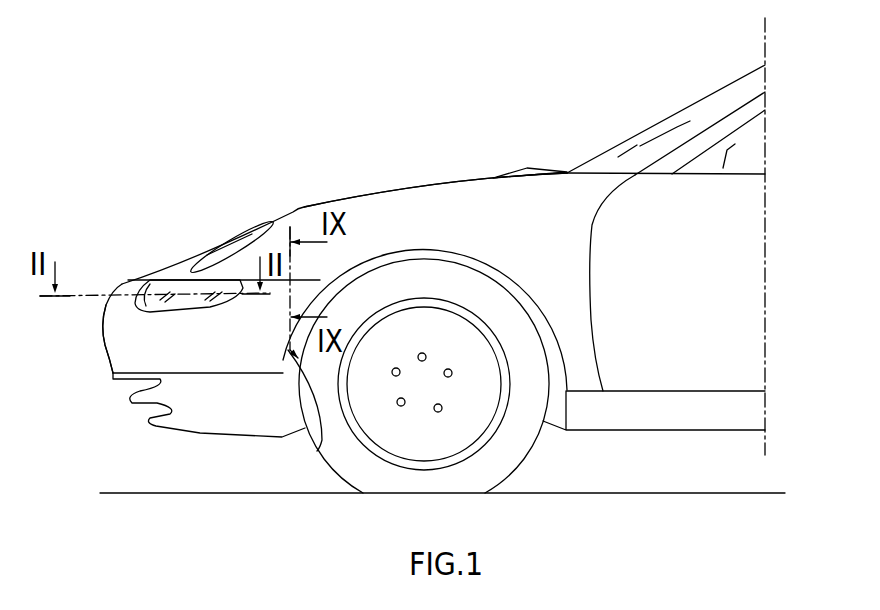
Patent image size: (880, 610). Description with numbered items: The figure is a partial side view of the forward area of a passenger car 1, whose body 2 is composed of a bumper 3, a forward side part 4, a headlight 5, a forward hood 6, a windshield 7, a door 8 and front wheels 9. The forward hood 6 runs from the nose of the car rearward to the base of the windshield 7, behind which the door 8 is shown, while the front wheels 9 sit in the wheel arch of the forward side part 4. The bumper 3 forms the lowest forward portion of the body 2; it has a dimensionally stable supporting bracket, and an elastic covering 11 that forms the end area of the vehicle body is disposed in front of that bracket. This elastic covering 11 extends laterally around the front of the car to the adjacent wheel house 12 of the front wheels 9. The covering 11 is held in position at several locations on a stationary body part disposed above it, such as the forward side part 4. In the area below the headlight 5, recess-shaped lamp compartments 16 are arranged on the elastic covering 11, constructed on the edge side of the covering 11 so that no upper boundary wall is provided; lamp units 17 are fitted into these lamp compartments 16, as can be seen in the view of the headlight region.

The passenger car 1 is at (320, 203).
The body 2 is at (121, 284).
The bumper 3 is at (101, 340).
The forward side part 4 is at (418, 207).
The headlight 5 is at (256, 222).
The forward hood 6 is at (524, 170).
The windshield 7 is at (658, 122).
The door 8 is at (742, 278).
The front wheels 9 is at (526, 461).
The elastic covering 11 is at (132, 358).
The wheel house 12 is at (319, 446).
The lamp compartments 16 is at (175, 318).
The lamp units 17 is at (182, 280).